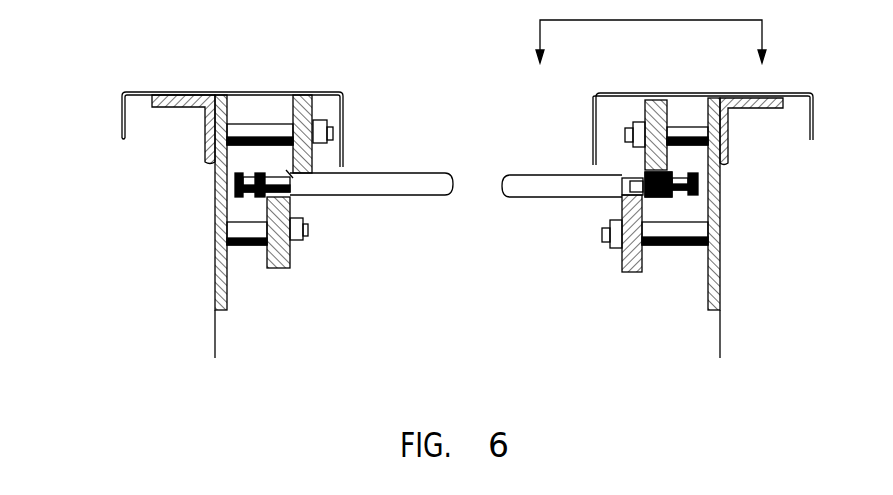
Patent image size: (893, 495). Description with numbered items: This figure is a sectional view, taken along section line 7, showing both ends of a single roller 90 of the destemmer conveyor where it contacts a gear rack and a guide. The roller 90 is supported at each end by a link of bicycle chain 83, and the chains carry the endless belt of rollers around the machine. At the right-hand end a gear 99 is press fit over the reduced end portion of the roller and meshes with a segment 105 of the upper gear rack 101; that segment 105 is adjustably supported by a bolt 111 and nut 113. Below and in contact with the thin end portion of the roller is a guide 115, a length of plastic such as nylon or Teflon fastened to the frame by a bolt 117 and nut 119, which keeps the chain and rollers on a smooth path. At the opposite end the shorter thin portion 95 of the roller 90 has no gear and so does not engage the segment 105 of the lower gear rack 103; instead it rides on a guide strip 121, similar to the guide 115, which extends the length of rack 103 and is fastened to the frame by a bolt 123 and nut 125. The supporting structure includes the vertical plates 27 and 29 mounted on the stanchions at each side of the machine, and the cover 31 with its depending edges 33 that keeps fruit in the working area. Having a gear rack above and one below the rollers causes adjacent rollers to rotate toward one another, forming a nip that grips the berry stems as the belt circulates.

The section line 7 is at (651, 41).
The vertical plate 27 is at (222, 283).
The vertical plate 29 is at (713, 297).
The cover 31 is at (170, 91).
The depending edge 33 is at (345, 113).
The bicycle chain 83 is at (235, 186).
The roller 90 is at (432, 177).
The end portion 95 is at (287, 173).
The gear 99 is at (668, 172).
The gear rack 101 is at (657, 72).
The gear rack 103 is at (277, 270).
The gear rack segment 105 is at (292, 203).
The bolt 111 is at (672, 128).
The nut 113 is at (633, 147).
The guide 115 is at (620, 207).
The bolt 117 is at (667, 245).
The nut 119 is at (615, 250).
The guide strip 121 is at (306, 107).
The bolt 123 is at (255, 125).
The nut 125 is at (328, 112).